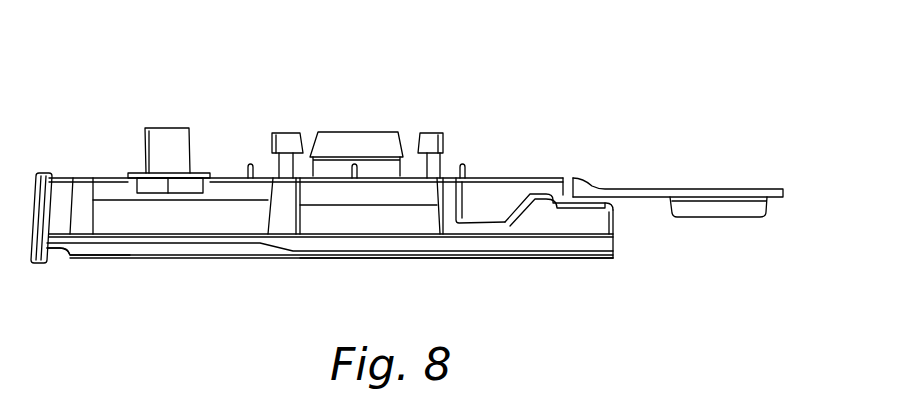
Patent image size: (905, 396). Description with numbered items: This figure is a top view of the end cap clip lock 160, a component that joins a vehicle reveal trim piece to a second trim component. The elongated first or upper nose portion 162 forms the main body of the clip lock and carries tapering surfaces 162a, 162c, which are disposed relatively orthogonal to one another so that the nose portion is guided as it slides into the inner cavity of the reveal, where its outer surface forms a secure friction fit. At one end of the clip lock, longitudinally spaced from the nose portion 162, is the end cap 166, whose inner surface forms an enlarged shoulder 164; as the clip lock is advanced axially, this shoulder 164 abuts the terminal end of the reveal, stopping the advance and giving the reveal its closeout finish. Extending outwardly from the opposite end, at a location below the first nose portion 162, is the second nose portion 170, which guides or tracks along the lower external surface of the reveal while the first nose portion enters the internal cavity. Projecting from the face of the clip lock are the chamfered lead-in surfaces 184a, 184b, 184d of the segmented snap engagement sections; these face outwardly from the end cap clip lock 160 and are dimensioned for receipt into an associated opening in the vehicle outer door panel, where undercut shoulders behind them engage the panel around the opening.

The end cap clip lock 160 is at (530, 131).
The first nose portion 162 is at (622, 265).
The tapering surface 162a is at (607, 203).
The tapering surface 162c is at (557, 256).
The enlarged shoulder 164 is at (47, 260).
The end cap 166 is at (33, 203).
The second nose portion 170 is at (780, 189).
The chamfered lead-in surface 184a is at (376, 146).
The chamfered lead-in surface 184b is at (290, 142).
The chamfered lead-in surface 184d is at (428, 143).